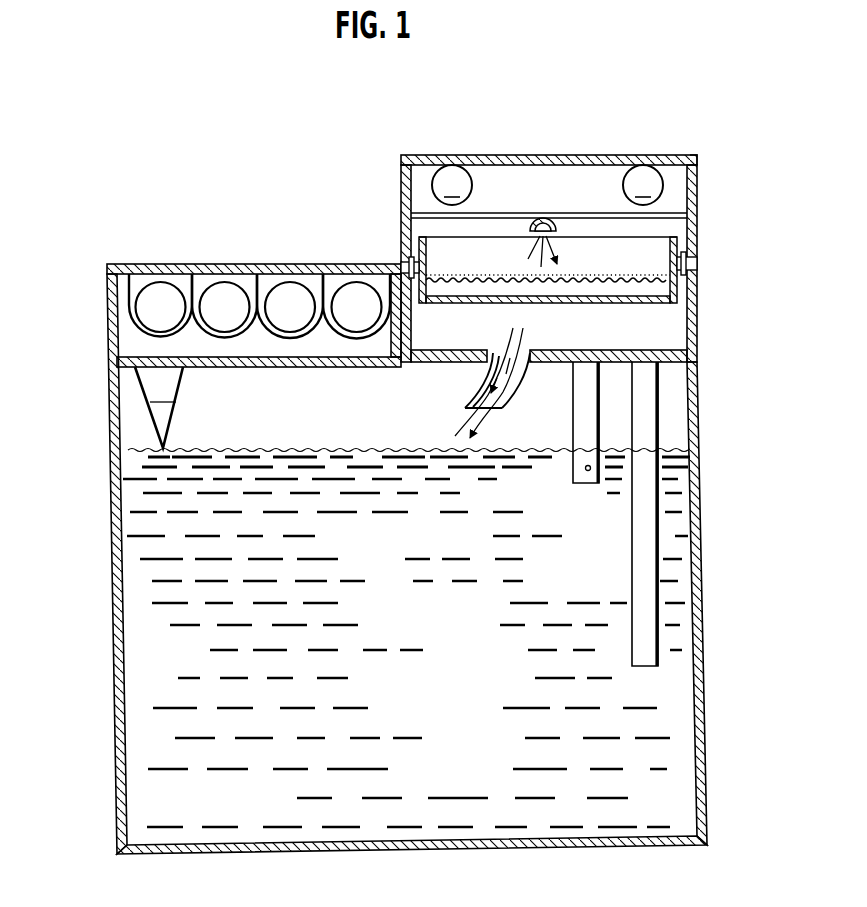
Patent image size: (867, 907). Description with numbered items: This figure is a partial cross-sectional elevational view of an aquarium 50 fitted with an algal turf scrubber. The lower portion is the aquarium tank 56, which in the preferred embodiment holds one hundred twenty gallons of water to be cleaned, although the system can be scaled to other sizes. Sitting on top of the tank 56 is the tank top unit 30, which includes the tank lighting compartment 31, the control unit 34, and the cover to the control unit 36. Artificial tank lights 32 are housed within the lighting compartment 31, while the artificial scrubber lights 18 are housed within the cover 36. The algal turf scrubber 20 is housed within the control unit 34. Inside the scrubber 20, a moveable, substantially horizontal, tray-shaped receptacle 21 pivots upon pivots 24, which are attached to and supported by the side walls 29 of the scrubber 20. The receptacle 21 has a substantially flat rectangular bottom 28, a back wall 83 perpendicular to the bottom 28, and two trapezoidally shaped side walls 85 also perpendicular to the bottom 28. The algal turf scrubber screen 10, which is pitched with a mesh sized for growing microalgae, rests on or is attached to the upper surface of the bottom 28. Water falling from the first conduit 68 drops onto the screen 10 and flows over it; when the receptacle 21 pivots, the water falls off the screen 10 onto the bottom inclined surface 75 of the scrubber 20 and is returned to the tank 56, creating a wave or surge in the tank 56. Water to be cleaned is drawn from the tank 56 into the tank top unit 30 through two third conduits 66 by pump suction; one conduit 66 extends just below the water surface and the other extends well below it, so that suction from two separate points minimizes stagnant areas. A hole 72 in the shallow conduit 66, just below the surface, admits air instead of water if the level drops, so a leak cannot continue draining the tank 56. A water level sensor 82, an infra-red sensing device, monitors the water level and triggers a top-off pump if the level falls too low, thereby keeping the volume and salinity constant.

The algal turf scrubber screen 10 is at (543, 284).
The artificial scrubber lights 18 is at (547, 185).
The algal turf scrubber 20 is at (704, 338).
The tray-shaped receptacle 21 is at (683, 292).
The pivots 24 is at (401, 259).
The bottom of the receptacle 28 is at (487, 306).
The side walls of the scrubber 29 is at (403, 226).
The tank top unit 30 is at (288, 262).
The tank lighting compartment 31 is at (105, 322).
The artificial tank lights 32 is at (223, 315).
The control unit 34 is at (704, 225).
The cover to the control unit 36 is at (699, 152).
The aquarium 50 is at (105, 391).
The aquarium tank 56 is at (112, 507).
The third conduits 66 is at (573, 403).
The first conduit 68 is at (543, 218).
The hole 72 is at (586, 469).
The bottom inclined surface 75 is at (601, 355).
The water level sensor 82 is at (176, 402).
The back wall 83 is at (523, 263).
The side walls of the receptacle 85 is at (429, 258).